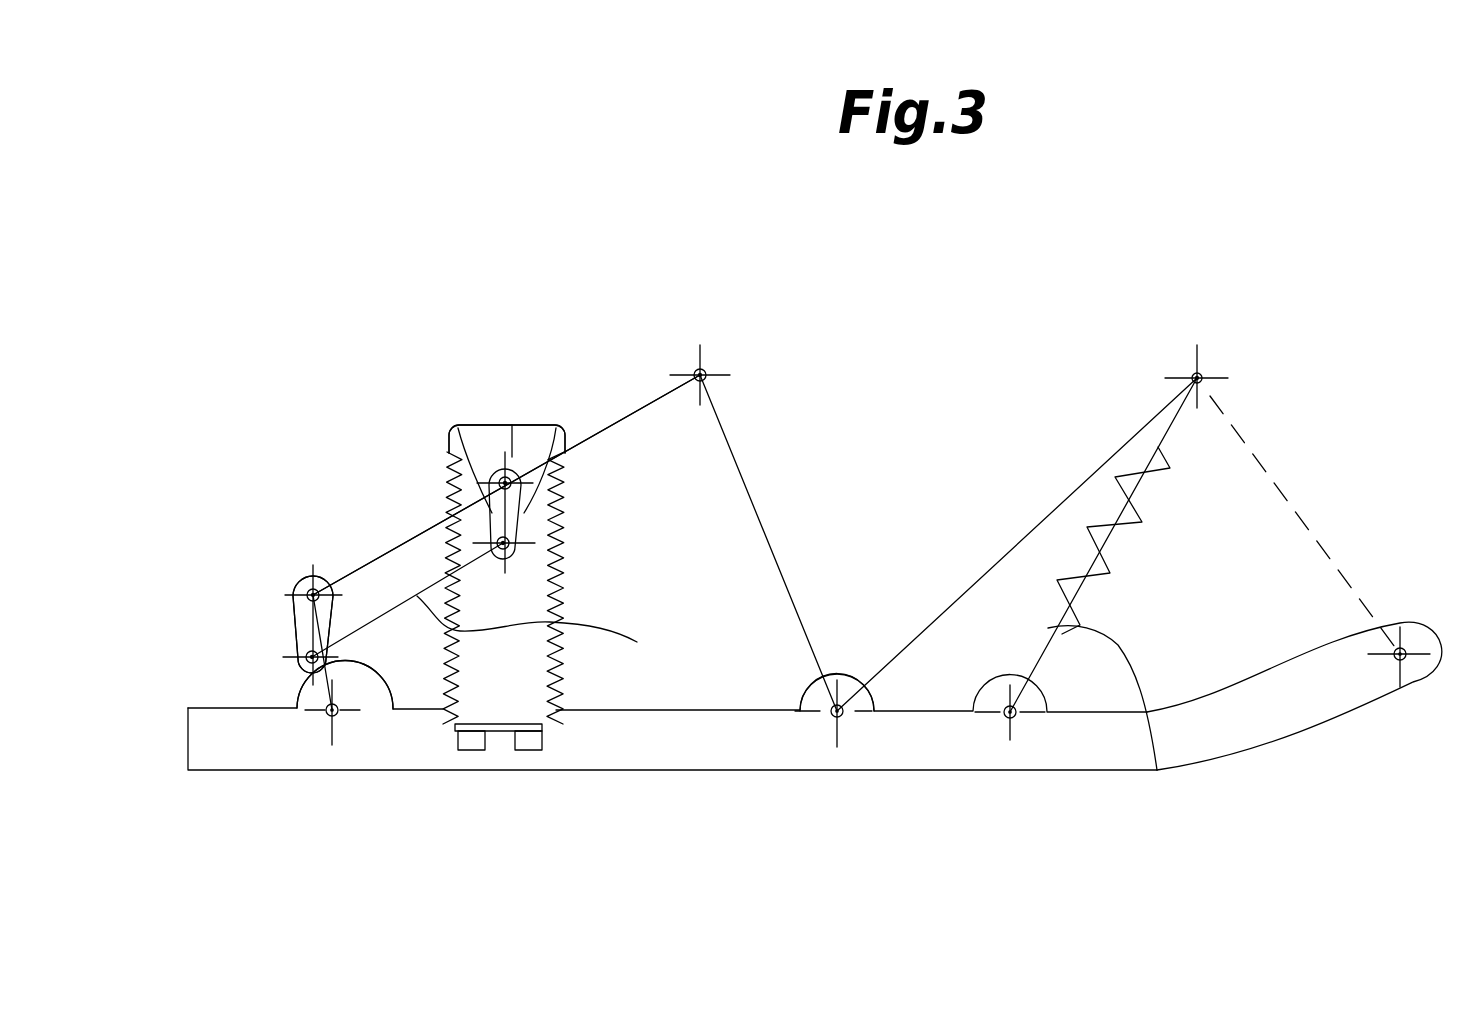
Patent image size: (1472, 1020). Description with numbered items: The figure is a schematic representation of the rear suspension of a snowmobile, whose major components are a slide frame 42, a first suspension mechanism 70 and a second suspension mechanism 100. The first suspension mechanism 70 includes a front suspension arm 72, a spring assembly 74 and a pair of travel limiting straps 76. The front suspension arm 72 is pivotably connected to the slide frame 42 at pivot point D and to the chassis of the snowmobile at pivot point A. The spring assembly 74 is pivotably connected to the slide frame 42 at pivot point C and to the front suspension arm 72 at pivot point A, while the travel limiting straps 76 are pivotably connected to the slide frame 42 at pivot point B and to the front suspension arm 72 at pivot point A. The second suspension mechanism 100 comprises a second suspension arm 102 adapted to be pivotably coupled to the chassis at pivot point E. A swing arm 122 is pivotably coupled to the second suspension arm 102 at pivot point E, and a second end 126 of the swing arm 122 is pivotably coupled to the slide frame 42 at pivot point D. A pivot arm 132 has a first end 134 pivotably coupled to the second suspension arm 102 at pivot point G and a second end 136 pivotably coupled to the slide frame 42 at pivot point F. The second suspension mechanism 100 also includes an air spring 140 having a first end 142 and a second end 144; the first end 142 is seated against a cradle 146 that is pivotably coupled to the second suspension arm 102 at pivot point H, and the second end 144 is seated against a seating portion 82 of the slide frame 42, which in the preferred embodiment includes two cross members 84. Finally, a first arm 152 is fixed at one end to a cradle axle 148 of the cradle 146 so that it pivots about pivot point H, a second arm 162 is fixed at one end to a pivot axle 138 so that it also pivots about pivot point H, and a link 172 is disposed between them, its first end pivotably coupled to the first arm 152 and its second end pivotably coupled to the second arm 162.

The slide frame 42 is at (1318, 703).
The first suspension mechanism 70 is at (1268, 428).
The front suspension arm 72 is at (1069, 495).
The spring assembly 74 is at (1157, 770).
The travel limiting straps 76 is at (1345, 562).
The seating portion 82 is at (502, 790).
The cross members 84 is at (473, 750).
The second suspension mechanism 100 is at (768, 370).
The second suspension arm 102 is at (655, 405).
The swing arm 122 is at (752, 497).
The second end 126 is at (838, 645).
The pivot arm 132 is at (393, 709).
The first end 134 is at (343, 613).
The second end 136 is at (288, 699).
The pivot axle 138 is at (301, 580).
The air spring 140 is at (581, 588).
The first end 142 is at (578, 487).
The second end 144 is at (582, 694).
The cradle 146 is at (556, 422).
The cradle axle 148 is at (460, 437).
The first arm 152 is at (553, 430).
The second arm 162 is at (297, 625).
The link 172 is at (555, 630).